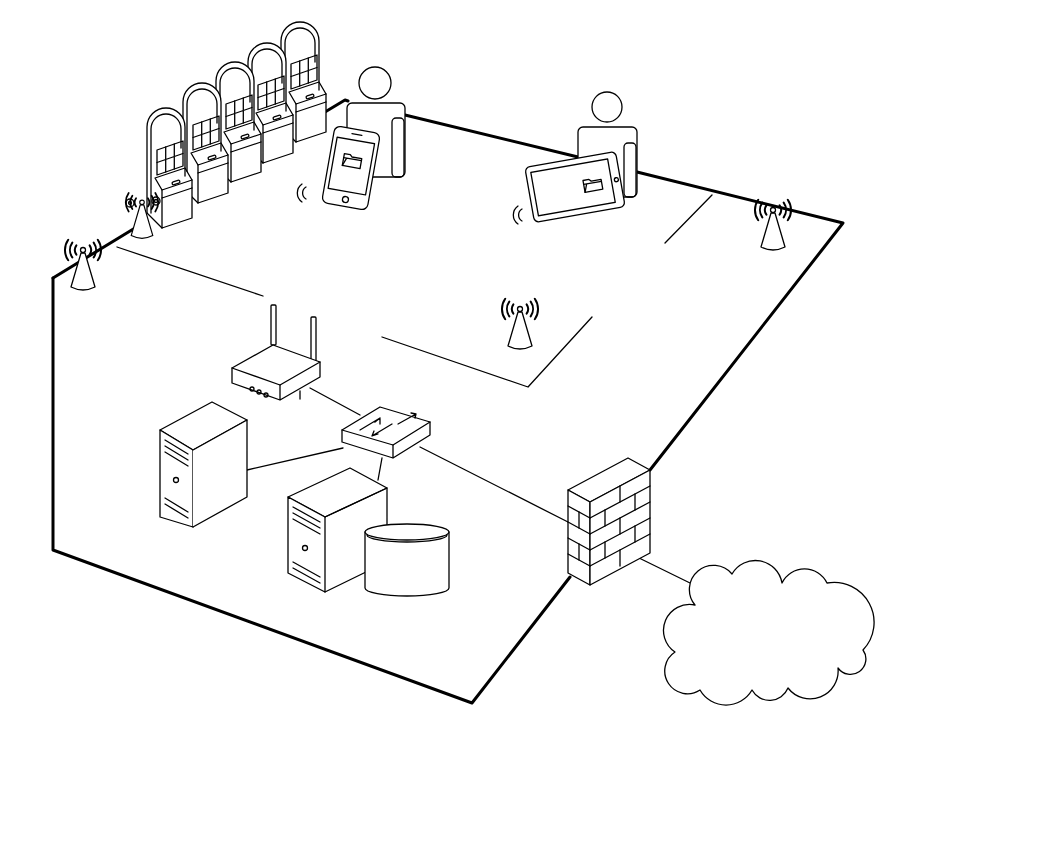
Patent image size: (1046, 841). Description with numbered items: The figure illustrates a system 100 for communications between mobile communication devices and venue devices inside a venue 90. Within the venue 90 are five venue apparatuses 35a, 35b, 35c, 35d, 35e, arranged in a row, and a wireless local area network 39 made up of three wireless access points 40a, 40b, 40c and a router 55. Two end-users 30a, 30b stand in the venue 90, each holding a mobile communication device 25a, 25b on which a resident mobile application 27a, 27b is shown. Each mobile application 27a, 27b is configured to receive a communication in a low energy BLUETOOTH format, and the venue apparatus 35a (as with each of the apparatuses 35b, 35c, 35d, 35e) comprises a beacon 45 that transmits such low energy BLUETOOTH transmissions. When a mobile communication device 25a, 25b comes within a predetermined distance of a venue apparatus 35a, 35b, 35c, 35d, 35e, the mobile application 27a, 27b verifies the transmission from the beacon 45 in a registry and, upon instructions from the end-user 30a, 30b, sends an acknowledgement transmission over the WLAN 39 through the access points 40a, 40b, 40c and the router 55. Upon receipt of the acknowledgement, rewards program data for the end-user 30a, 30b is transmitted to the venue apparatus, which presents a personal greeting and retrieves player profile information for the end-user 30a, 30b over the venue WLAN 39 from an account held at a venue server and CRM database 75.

The system 100 is at (788, 60).
The mobile communication device 25a is at (369, 207).
The mobile communication device 25b is at (525, 165).
The resident mobile application 27a is at (360, 172).
The resident mobile application 27b is at (603, 212).
The end-user 30a is at (398, 100).
The end-user 30b is at (638, 128).
The venue apparatus 35a is at (150, 112).
The venue apparatus 35b is at (185, 84).
The venue apparatus 35c is at (220, 62).
The venue apparatus 35d is at (250, 42).
The venue apparatus 35e is at (285, 20).
The wireless local area network (WLAN) 39 is at (222, 351).
The wireless access point 40a is at (88, 291).
The wireless access point 40b is at (510, 337).
The wireless access point 40c is at (775, 246).
The beacon 45 is at (143, 181).
The router 55 is at (415, 417).
The CRM database 75 is at (437, 527).
The venue 90 is at (700, 427).